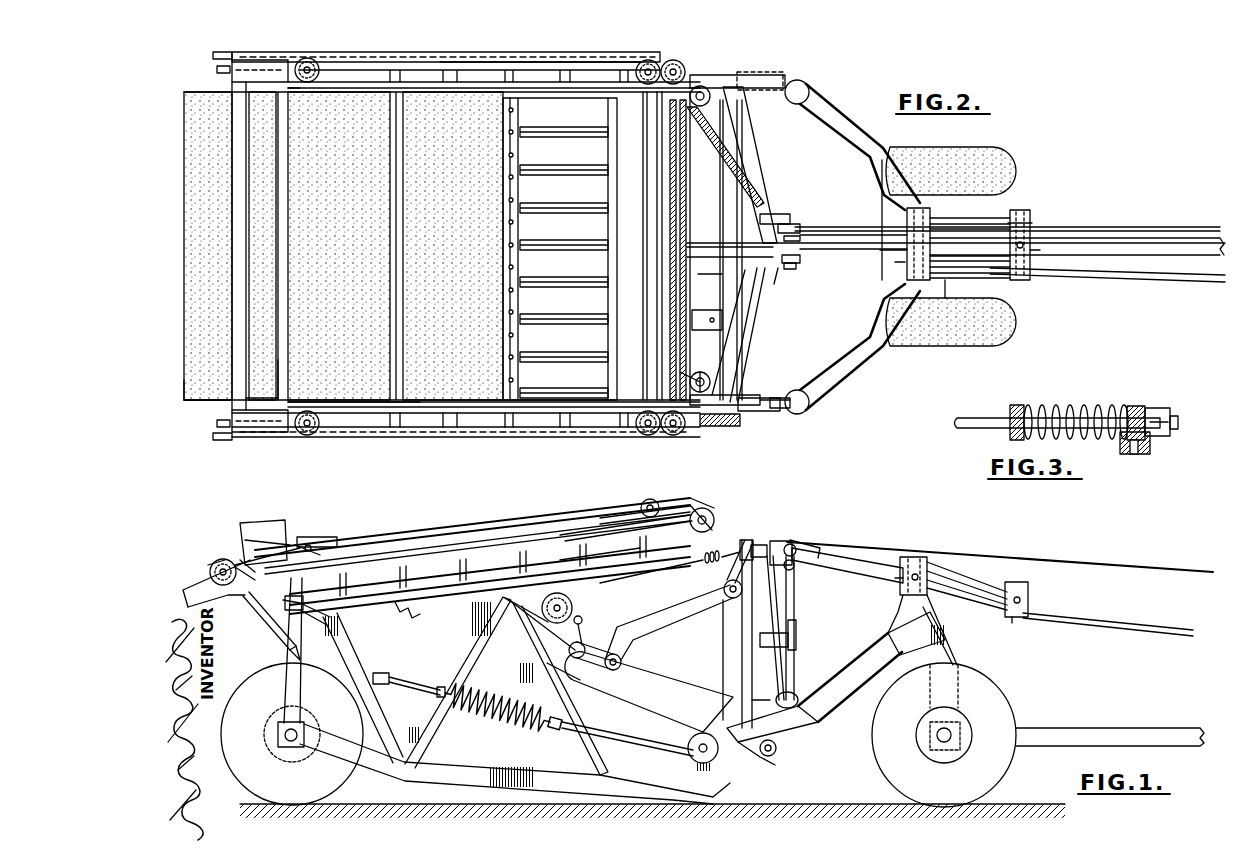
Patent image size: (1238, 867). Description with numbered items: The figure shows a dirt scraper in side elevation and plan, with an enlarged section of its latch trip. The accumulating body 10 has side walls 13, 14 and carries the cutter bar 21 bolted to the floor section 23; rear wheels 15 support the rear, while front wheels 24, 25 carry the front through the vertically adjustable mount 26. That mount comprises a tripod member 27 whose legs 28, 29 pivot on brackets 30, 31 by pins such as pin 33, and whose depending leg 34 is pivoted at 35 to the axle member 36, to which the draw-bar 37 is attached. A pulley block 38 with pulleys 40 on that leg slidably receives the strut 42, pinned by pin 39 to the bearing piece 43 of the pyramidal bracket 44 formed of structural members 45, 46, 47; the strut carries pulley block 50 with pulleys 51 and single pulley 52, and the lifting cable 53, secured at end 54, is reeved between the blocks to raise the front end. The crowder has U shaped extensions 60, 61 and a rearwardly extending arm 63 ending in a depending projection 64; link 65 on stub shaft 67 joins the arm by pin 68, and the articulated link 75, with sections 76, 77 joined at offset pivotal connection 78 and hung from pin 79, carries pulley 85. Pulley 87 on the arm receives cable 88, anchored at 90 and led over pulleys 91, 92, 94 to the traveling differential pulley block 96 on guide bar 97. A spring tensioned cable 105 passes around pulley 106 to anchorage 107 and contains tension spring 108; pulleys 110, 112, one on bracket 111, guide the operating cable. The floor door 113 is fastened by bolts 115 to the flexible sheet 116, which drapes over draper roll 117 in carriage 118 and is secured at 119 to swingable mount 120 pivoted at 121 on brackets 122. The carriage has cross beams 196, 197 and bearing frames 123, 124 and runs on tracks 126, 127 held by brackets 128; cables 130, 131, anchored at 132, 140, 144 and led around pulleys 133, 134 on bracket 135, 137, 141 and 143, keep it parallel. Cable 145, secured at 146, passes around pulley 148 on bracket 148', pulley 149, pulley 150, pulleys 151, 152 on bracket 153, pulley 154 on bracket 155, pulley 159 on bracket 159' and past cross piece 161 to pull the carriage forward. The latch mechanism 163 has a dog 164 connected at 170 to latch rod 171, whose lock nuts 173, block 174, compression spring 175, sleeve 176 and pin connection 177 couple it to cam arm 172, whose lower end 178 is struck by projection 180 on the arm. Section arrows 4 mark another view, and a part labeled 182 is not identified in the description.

In FIG. 1, the accumulating body 10 is at (395, 788).
In FIG. 2, the side wall 13 is at (332, 406).
In FIG. 1, the side wall 13 is at (506, 676).
In FIG. 2, the side wall 14 is at (322, 92).
In FIG. 1, the coaxial wheels 15 is at (236, 772).
In FIG. 1, the cutter bar 21 is at (678, 798).
In FIG. 2, the floor section 23 is at (622, 303).
In FIG. 2, the wheel 24 is at (1014, 166).
In FIG. 2, the wheel 25 is at (1014, 333).
In FIG. 1, the wheel 25 is at (1005, 700).
In FIG. 2, the vertically adjustable mount 26 is at (891, 273).
In FIG. 1, the vertically adjustable mount 26 is at (853, 645).
In FIG. 1, the tripod member 27 is at (930, 630).
In FIG. 2, the leg 28 is at (860, 148).
In FIG. 2, the leg 29 is at (848, 358).
In FIG. 1, the leg 29 is at (850, 680).
In FIG. 2, the bracket 30 is at (760, 78).
In FIG. 2, the bracket 31 is at (770, 414).
In FIG. 1, the bracket 31 is at (758, 758).
In FIG. 1, the coaxial pin 33 is at (780, 755).
In FIG. 1, the depending leg 34 is at (946, 658).
In FIG. 1, the pivot 35 is at (960, 700).
In FIG. 2, the axle member 36 is at (955, 298).
In FIG. 1, the axle member 36 is at (916, 747).
In FIG. 2, the draw-bar 37 is at (1160, 238).
In FIG. 1, the draw-bar 37 is at (1066, 736).
In FIG. 2, the pulley block 38 is at (905, 213).
In FIG. 1, the pulley block 38 is at (913, 556).
In FIG. 1, the pin 39 is at (806, 556).
In FIG. 2, the pulleys 40 is at (888, 261).
In FIG. 1, the pulleys 40 is at (904, 584).
In FIG. 2, the strut 42 is at (832, 236).
In FIG. 1, the strut 42 is at (874, 570).
In FIG. 2, the bearing piece 43 is at (798, 256).
In FIG. 1, the bearing piece 43 is at (796, 548).
In FIG. 2, the pyramidal bracket member 44 is at (728, 210).
In FIG. 2, the structural member 45 is at (676, 267).
In FIG. 2, the structural member 46 is at (745, 189).
In FIG. 2, the structural member 47 is at (752, 318).
In FIG. 2, the pulley block 50 is at (1030, 214).
In FIG. 1, the pulley block 50 is at (1032, 592).
In FIG. 2, the pulleys 51 is at (1030, 226).
In FIG. 1, the pulleys 51 is at (1028, 620).
In FIG. 2, the single pulley 52 is at (1032, 258).
In FIG. 2, the lifting cable 53 is at (1138, 276).
In FIG. 1, the lifting cable 53 is at (1123, 630).
In FIG. 2, the cable end 54 is at (935, 215).
In FIG. 1, the cable end 54 is at (930, 553).
In FIG. 2, the U shaped extension 60 is at (784, 80).
In FIG. 2, the U shaped extension 61 is at (790, 415).
In FIG. 1, the rearwardly extending arm 63 is at (684, 686).
In FIG. 1, the depending projection 64 is at (556, 664).
In FIG. 1, the link 65 is at (640, 617).
In FIG. 1, the stub shaft 67 is at (727, 598).
In FIG. 1, the pin 68 is at (626, 656).
In FIG. 1, the articulated link 75 is at (799, 632).
In FIG. 1, the link section 76 is at (793, 606).
In FIG. 1, the link section 77 is at (794, 650).
In FIG. 1, the offset pivotal connection 78 is at (772, 656).
In FIG. 1, the pin 79 is at (796, 568).
In FIG. 2, the pulley 85 is at (794, 265).
In FIG. 1, the pulley 85 is at (797, 699).
In FIG. 1, the pulley 87 is at (560, 648).
In FIG. 1, the cable 88 is at (572, 608).
In FIG. 1, the cable anchorage 90 is at (580, 638).
In FIG. 1, the second pulley 91 is at (535, 627).
In FIG. 1, the third pulley 92 is at (652, 614).
In FIG. 2, the pulley 94 is at (705, 78).
In FIG. 2, the traveling differential pulley block 96 is at (698, 310).
In FIG. 2, the guide bar 97 is at (707, 274).
In FIG. 1, the spring tensioned cable 105 is at (642, 720).
In FIG. 1, the pulley 106 is at (703, 734).
In FIG. 1, the cable anchorage 107 is at (395, 668).
In FIG. 1, the tension spring 108 is at (496, 724).
In FIG. 2, the pulley 110 is at (790, 224).
In FIG. 2, the bracket 111 is at (775, 214).
In FIG. 2, the second pulley 112 is at (778, 282).
In FIG. 1, the second pulley 112 is at (775, 544).
In FIG. 2, the door 113 is at (506, 238).
In FIG. 2, the bolts 115 is at (508, 268).
In FIG. 2, the sheet of flexible material 116 is at (452, 305).
In FIG. 1, the sheet of flexible material 116 is at (210, 574).
In FIG. 2, the draper roll 117 is at (262, 398).
In FIG. 2, the carriage 118 is at (226, 412).
In FIG. 1, the carriage 118 is at (256, 519).
In FIG. 1, the sheet attachment 119 is at (190, 610).
In FIG. 1, the swingable mount 120 is at (192, 598).
In FIG. 1, the pivot 121 is at (250, 600).
In FIG. 1, the brackets 122 is at (277, 613).
In FIG. 2, the bearing frame 123 is at (270, 436).
In FIG. 1, the bearing frame 123 is at (275, 530).
In FIG. 2, the bearing frame 124 is at (272, 48).
In FIG. 2, the track 126 is at (545, 430).
In FIG. 1, the track 126 is at (385, 556).
In FIG. 2, the track 127 is at (578, 62).
In FIG. 2, the brackets 128 is at (526, 48).
In FIG. 1, the brackets 128 is at (412, 607).
In FIG. 2, the cable 130 is at (396, 62).
In FIG. 1, the cable 130 is at (418, 552).
In FIG. 2, the cable 131 is at (240, 55).
In FIG. 1, the cable 131 is at (540, 545).
In FIG. 1, the cable attachment 132 is at (248, 548).
In FIG. 2, the pulley 133 is at (222, 442).
In FIG. 1, the pulley 133 is at (208, 570).
In FIG. 1, the second pulley 134 is at (668, 538).
In FIG. 1, the bracket 135 is at (625, 558).
In FIG. 2, the third pulley 137 is at (685, 78).
In FIG. 2, the cable end 140 is at (306, 58).
In FIG. 2, the pulley 141 is at (212, 55).
In FIG. 2, the pulley 143 is at (678, 436).
In FIG. 1, the cable attachment 144 is at (320, 545).
In FIG. 2, the single cable 145 is at (1118, 230).
In FIG. 1, the single cable 145 is at (1120, 560).
In FIG. 2, the cable anchorage 146 is at (673, 60).
In FIG. 2, the pulley 148 is at (494, 59).
In FIG. 2, the bracket 148' is at (304, 103).
In FIG. 2, the pulley 149 is at (652, 60).
In FIG. 2, the third pulley 150 is at (646, 437).
In FIG. 1, the third pulley 150 is at (655, 512).
In FIG. 2, the fourth pulley 151 is at (308, 435).
In FIG. 1, the fourth pulley 151 is at (305, 538).
In FIG. 2, the fifth pulley 152 is at (690, 390).
In FIG. 1, the fifth pulley 152 is at (708, 512).
In FIG. 1, the bracket 153 is at (634, 522).
In FIG. 2, the sixth pulley 154 is at (690, 378).
In FIG. 2, the bracket 155 is at (700, 426).
In FIG. 2, the pulley 159 is at (749, 372).
In FIG. 1, the pulley 159 is at (760, 537).
In FIG. 2, the bracket 159' is at (751, 386).
In FIG. 2, the cross piece 161 is at (700, 243).
In FIG. 1, the latch mechanism 163 is at (283, 642).
In FIG. 1, the dog 164 is at (240, 557).
In FIG. 1, the pivot connection 170 is at (290, 660).
In FIG. 3, the latch rod 171 is at (975, 414).
In FIG. 1, the latch rod 171 is at (325, 628).
In FIG. 3, the cam arm 172 is at (1152, 440).
In FIG. 1, the cam arm 172 is at (738, 550).
In FIG. 3, the adjustable lock nuts 173 is at (1160, 406).
In FIG. 3, the block 174 is at (1132, 404).
In FIG. 3, the compression spring 175 is at (1068, 404).
In FIG. 3, the sleeve 176 is at (1020, 404).
In FIG. 3, the pin connection 177 is at (1135, 452).
In FIG. 1, the lower end of cam arm 178 is at (716, 648).
In FIG. 2, the projection 180 is at (746, 414).
In FIG. 1, the projection 180 is at (752, 697).
In FIG. 1, the clamp 182 is at (770, 643).
In FIG. 2, the cross beam 196 is at (232, 382).
In FIG. 2, the cross beam 197 is at (283, 365).
In FIG. 1, the cross beam 197 is at (410, 638).
In FIG. 2, the section line 4 is at (151, 256).